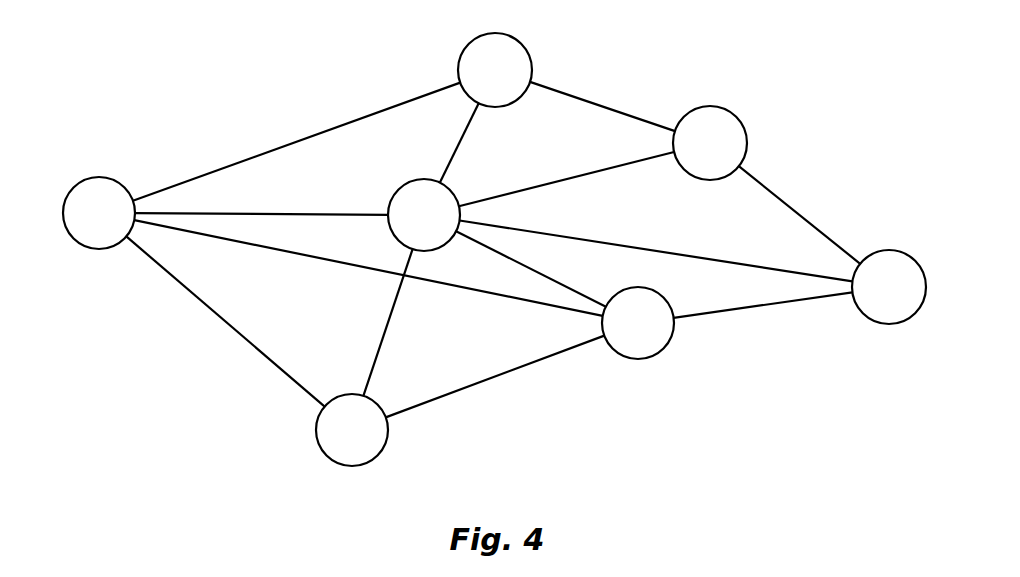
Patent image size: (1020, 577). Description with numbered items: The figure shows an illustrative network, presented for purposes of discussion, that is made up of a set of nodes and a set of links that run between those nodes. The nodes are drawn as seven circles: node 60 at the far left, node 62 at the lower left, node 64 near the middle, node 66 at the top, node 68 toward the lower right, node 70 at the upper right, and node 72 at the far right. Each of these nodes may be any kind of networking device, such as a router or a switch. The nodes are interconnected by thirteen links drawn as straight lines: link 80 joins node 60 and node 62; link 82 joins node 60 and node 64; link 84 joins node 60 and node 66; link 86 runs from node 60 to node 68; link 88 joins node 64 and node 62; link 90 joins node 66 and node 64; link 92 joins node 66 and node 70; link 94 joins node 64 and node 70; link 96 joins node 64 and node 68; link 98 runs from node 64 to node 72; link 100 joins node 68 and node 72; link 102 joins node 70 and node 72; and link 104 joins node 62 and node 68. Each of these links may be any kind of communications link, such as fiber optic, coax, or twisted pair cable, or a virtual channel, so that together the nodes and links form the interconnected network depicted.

The node 60 is at (85, 225).
The node 62 is at (338, 442).
The node 64 is at (410, 227).
The node 66 is at (481, 82).
The node 68 is at (624, 335).
The node 70 is at (696, 155).
The node 72 is at (875, 299).
The link 80 is at (233, 331).
The link 82 is at (352, 213).
The link 84 is at (388, 104).
The link 86 is at (172, 232).
The link 88 is at (392, 310).
The link 90 is at (448, 165).
The link 92 is at (566, 92).
The link 94 is at (593, 167).
The link 96 is at (548, 277).
The link 98 is at (622, 245).
The link 100 is at (750, 305).
The link 102 is at (790, 205).
The link 104 is at (520, 365).